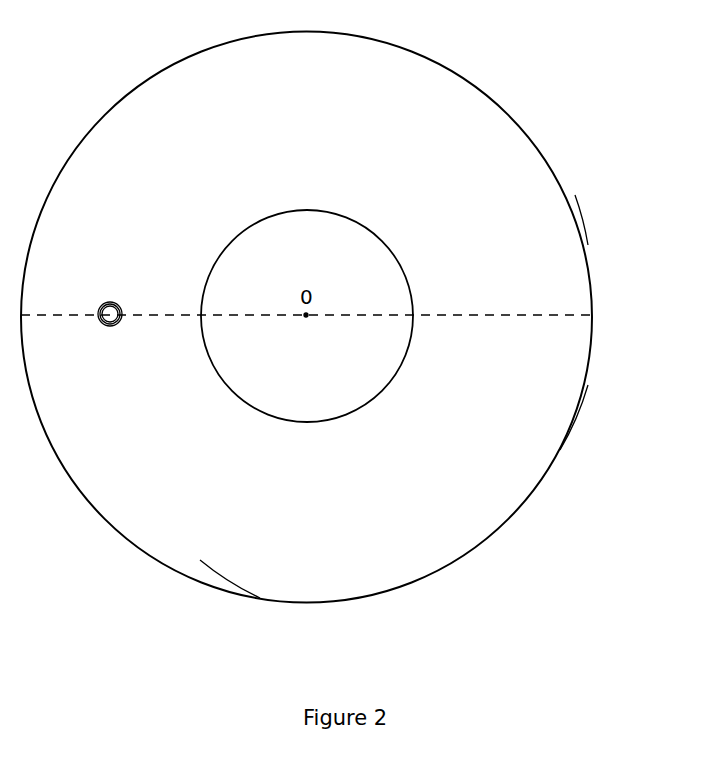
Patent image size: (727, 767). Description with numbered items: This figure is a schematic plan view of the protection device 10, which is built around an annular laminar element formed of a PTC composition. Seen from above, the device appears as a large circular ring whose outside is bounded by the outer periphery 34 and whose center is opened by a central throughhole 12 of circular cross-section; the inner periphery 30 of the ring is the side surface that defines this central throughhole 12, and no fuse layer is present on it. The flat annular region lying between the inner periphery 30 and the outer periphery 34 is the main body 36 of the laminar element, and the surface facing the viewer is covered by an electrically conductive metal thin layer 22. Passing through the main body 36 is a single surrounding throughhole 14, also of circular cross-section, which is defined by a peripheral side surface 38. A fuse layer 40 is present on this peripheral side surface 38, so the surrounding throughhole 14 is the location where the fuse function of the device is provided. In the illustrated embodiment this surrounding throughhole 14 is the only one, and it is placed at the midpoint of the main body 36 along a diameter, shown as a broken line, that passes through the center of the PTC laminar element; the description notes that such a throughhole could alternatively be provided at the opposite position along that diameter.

The protection device 10 is at (572, 130).
The central throughhole 12 is at (333, 247).
The surrounding throughhole 14 is at (105, 302).
The electrically conductive metal thin layer 22 is at (554, 232).
The inner periphery 30 is at (415, 302).
The outer periphery 34 is at (578, 412).
The main body 36 is at (258, 508).
The peripheral side surface 38 is at (122, 322).
The fuse layer 40 is at (108, 324).